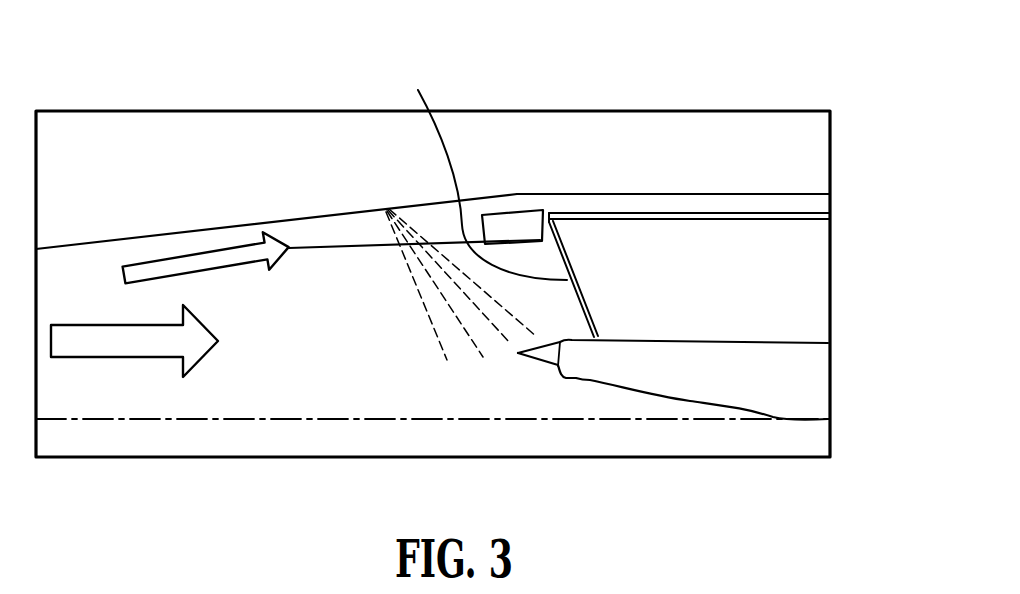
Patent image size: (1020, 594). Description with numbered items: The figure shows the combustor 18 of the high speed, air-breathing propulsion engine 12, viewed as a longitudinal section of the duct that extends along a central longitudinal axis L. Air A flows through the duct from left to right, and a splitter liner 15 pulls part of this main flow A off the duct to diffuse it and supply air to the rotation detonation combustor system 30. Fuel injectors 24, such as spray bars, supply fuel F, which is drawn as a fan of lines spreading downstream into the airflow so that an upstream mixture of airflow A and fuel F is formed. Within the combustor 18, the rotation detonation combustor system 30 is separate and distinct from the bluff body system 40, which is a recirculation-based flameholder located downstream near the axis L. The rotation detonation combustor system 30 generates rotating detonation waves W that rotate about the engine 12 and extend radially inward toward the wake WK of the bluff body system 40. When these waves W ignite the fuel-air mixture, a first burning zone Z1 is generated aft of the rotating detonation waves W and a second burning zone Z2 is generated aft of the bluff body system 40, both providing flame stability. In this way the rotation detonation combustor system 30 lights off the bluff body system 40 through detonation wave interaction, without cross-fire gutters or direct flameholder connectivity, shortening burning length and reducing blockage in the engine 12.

The air-breathing propulsion engine 12 is at (433, 246).
The splitter liner 15 is at (394, 148).
The combustor 18 is at (673, 136).
The fuel injectors 24 is at (276, 146).
The rotation detonation combustor system 30 is at (540, 148).
The bluff body system 40 is at (640, 432).
The air A is at (164, 289).
The central longitudinal axis L is at (433, 471).
The fuel F is at (428, 366).
The rotating detonation waves W is at (481, 170).
The wake WK is at (631, 452).
The first burning zone Z1 is at (828, 242).
The second burning zone Z2 is at (830, 340).